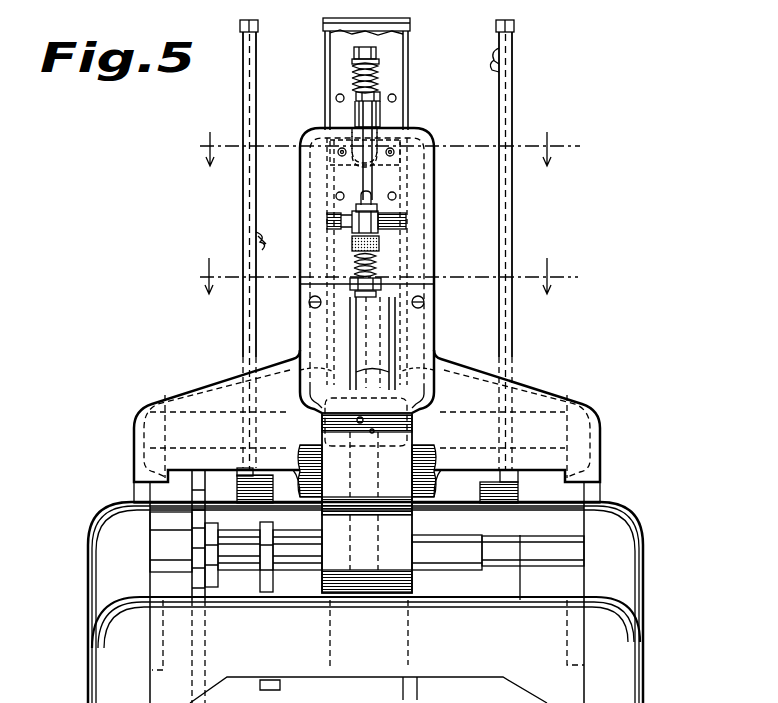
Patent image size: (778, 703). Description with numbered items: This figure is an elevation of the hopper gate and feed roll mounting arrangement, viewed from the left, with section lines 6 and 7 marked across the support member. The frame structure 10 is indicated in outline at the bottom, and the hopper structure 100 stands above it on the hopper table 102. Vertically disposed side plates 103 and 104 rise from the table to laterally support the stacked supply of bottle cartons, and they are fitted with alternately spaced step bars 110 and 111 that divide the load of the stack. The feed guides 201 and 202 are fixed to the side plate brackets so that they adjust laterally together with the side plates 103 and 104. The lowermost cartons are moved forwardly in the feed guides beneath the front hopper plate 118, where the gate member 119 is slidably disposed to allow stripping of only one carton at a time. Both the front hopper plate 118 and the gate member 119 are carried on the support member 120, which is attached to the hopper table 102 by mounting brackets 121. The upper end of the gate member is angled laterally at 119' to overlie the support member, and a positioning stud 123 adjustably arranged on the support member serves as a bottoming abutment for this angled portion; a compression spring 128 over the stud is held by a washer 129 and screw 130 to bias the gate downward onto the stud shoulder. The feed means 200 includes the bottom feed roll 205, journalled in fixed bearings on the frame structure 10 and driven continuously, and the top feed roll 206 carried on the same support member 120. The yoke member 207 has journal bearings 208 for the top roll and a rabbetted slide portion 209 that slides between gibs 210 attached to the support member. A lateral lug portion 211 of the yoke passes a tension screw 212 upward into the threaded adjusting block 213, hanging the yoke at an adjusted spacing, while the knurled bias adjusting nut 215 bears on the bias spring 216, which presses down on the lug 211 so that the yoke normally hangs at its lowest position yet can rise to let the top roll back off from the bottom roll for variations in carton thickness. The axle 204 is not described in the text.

The section line 6- 6 is at (385, 149).
The section line 7- 7 is at (383, 276).
The frame structure 10 is at (656, 665).
The hopper structure 100 is at (522, 58).
The hopper table 102 is at (640, 538).
The side plate 103 is at (243, 183).
The side plate 104 is at (512, 192).
The step bar 110 is at (258, 240).
The step bar 111 is at (499, 70).
The front hopper plate 118 is at (409, 36).
The gate member 119 is at (409, 114).
The laterally angled portion 119' is at (412, 88).
The support member 120 is at (196, 386).
The mounting bracket 121 is at (134, 487).
The positioning stud 123 is at (363, 106).
The compression spring 128 is at (352, 78).
The washer 129 is at (352, 62).
The screw 130 is at (356, 50).
The feed means 200 is at (575, 386).
The feed guide 201 is at (237, 484).
The feed guide 202 is at (508, 500).
The axle 204 is at (367, 556).
The bottom feed roll 205 is at (376, 602).
The top feed roll 206 is at (390, 520).
The yoke member 207 is at (424, 408).
The journal bearings 208 is at (310, 500).
The rabbetted slide portion 209 is at (418, 342).
The gib 210 is at (312, 318).
The lateral lug portion 211 is at (381, 289).
The tension screw 212 is at (368, 196).
The adjusting block 213 is at (406, 222).
The knurled bias adjusting nut 215 is at (380, 242).
The bias spring 216 is at (378, 268).